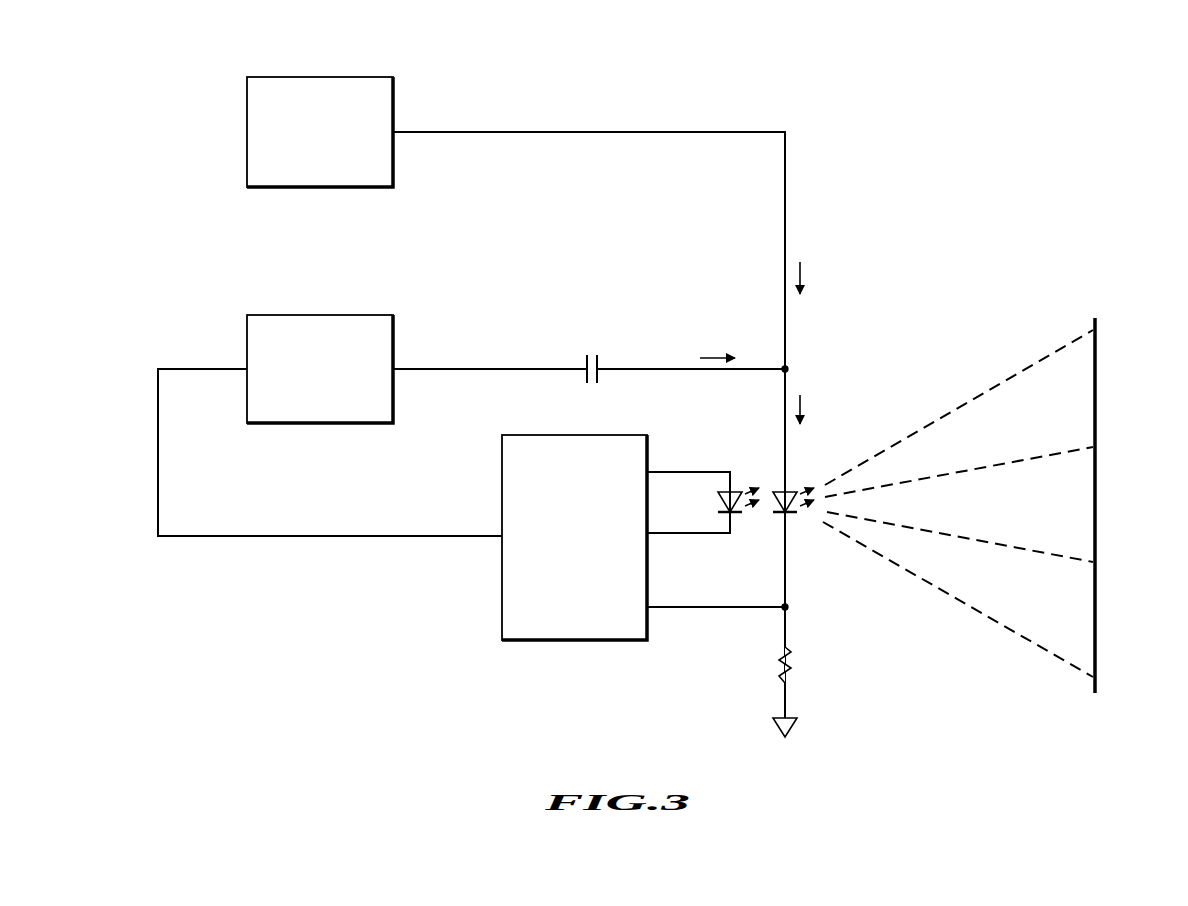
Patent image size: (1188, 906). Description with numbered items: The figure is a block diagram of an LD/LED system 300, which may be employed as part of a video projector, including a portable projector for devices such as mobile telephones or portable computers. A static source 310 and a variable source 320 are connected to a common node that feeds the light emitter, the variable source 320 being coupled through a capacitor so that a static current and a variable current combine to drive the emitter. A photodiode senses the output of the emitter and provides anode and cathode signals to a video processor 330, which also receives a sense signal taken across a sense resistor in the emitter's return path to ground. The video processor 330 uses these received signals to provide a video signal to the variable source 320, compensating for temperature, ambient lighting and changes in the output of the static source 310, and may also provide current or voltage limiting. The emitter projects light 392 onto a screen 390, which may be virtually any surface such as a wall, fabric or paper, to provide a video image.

The LD/LED system 300 is at (877, 89).
The static source 310 is at (303, 77).
The variable source 320 is at (303, 315).
The video processor 330 is at (558, 435).
The screen 390 is at (1095, 398).
The light 392 is at (1005, 378).